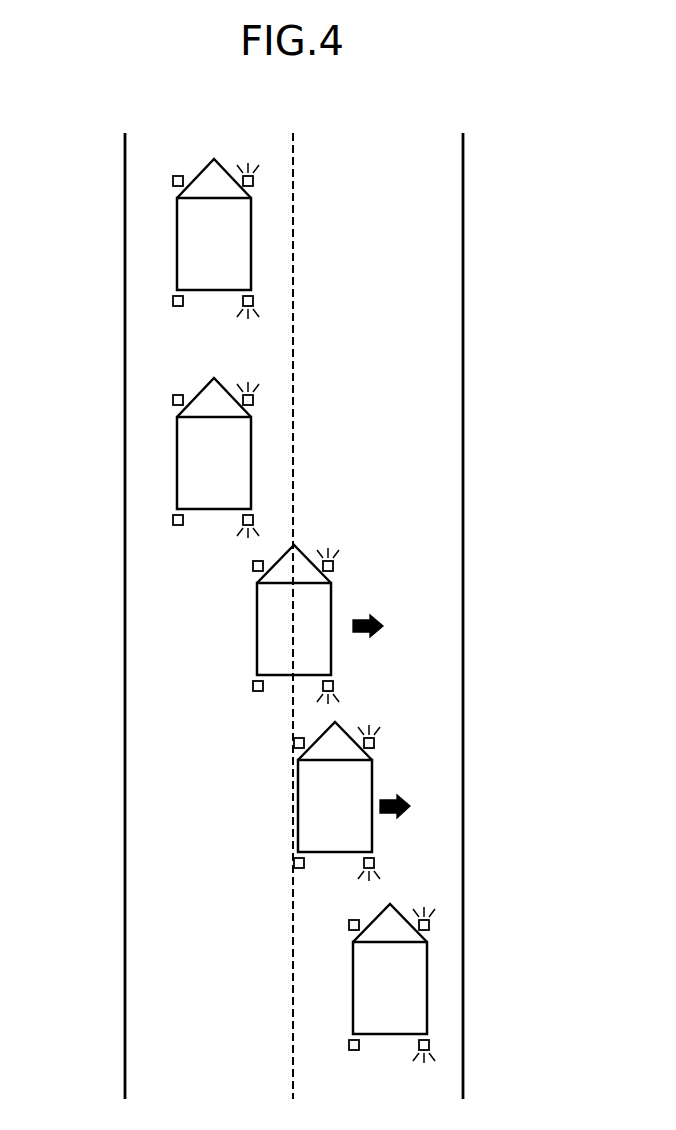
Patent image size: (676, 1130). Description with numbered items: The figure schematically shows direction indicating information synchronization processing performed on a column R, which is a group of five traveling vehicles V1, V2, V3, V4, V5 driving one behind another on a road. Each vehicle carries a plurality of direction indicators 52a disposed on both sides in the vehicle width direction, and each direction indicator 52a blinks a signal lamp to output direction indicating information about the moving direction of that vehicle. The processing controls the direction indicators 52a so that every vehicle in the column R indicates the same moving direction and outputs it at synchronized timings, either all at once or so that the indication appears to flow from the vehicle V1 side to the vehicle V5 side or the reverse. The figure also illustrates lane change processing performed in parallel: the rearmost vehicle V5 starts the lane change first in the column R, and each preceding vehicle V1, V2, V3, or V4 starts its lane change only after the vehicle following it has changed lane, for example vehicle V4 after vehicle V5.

The direction indicator 52a is at (243, 178).
The vehicle V1 is at (255, 242).
The vehicle V2 is at (255, 462).
The vehicle V3 is at (334, 605).
The vehicle V4 is at (377, 780).
The vehicle V5 is at (432, 961).
The column R is at (106, 284).